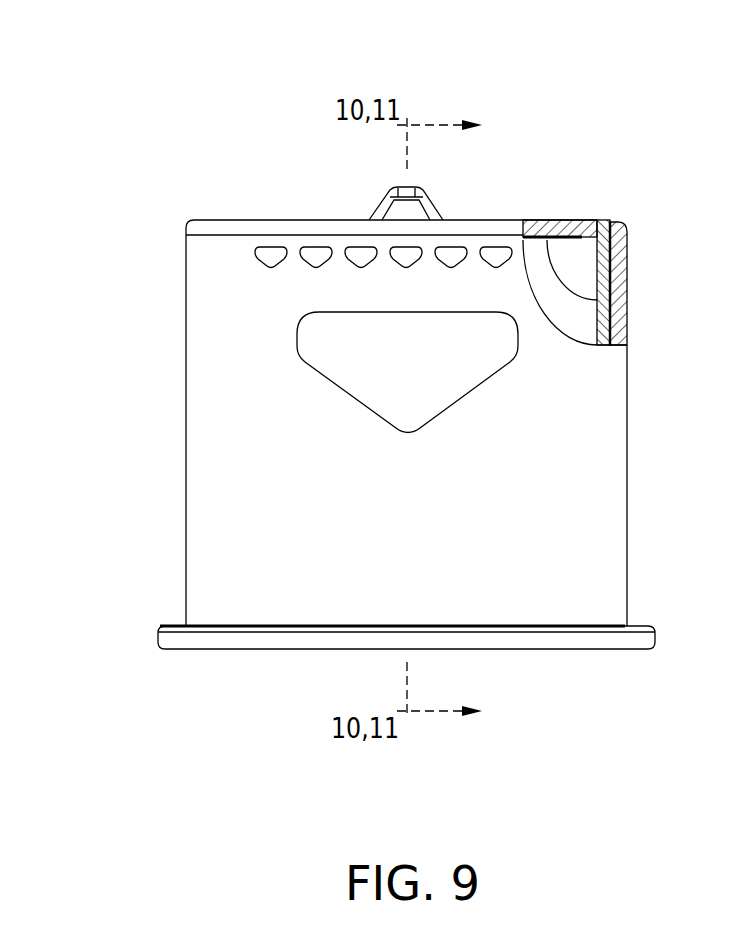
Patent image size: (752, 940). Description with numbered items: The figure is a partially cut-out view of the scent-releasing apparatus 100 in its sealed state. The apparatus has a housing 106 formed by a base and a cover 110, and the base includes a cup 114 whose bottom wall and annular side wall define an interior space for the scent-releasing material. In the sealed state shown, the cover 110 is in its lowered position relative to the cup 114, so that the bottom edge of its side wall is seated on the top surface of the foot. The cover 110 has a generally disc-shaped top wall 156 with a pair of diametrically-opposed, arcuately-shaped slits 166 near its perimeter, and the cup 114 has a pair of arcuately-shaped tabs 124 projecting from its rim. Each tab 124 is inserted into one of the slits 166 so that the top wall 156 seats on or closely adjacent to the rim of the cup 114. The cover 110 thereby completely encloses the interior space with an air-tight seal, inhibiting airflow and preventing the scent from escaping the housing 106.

The scent-releasing apparatus 100 is at (155, 112).
The housing 106 is at (180, 219).
The cover 110 is at (186, 381).
The cup 114 is at (546, 240).
The tabs 124 is at (612, 228).
The top wall 156 is at (313, 220).
The slits 166 is at (599, 221).